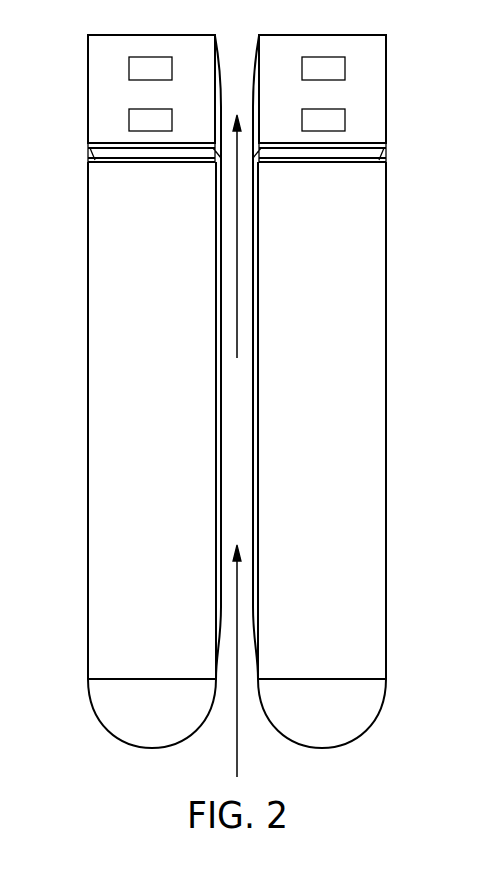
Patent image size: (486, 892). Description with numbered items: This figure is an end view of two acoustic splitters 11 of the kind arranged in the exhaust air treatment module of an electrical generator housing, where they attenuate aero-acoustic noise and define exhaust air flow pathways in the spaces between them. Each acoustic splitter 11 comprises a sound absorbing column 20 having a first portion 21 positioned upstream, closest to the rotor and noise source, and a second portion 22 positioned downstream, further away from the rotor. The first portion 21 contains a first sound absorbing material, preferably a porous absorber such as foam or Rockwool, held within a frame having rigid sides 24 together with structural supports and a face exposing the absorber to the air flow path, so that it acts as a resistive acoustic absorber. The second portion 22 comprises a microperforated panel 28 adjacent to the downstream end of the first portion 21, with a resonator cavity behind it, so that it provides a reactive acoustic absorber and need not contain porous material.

The acoustic splitter 11 is at (113, 703).
The sound absorbing column 20 is at (88, 302).
The first portion 21 is at (88, 495).
The second portion 22 is at (88, 90).
The rigid side 24 is at (383, 636).
The microperforated panel 28 is at (88, 152).